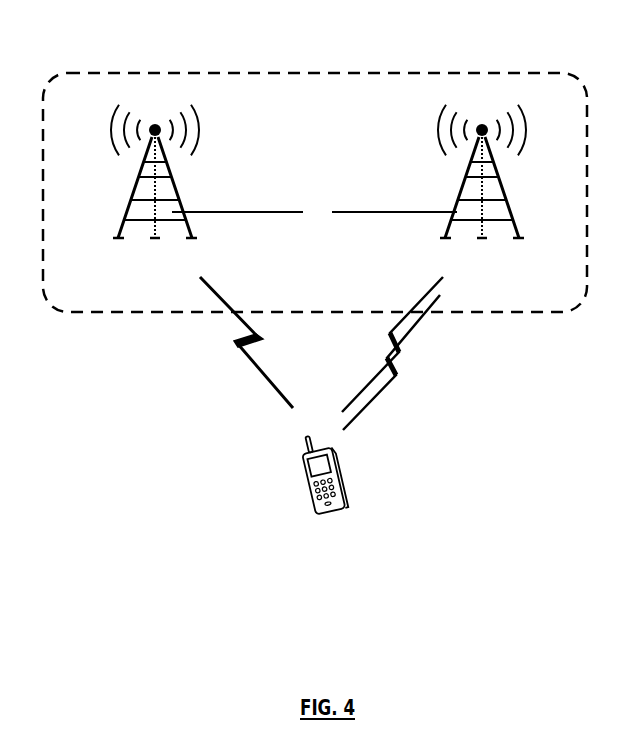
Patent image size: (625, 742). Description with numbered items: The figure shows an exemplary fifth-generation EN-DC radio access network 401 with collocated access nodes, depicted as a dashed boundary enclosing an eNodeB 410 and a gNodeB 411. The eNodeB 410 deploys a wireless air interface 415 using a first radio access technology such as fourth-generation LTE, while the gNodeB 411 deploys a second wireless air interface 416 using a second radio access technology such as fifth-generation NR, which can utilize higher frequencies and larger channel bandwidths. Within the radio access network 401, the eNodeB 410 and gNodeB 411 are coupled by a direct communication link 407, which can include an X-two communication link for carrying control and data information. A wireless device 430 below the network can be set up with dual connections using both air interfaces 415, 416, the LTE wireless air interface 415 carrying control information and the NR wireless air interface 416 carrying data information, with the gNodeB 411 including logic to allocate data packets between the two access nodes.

The radio access network 401 is at (117, 70).
The direct communication link 407 is at (381, 212).
The eNodeB 410 is at (139, 201).
The gNodeB 411 is at (502, 203).
The wireless air interface 415 is at (244, 343).
The second wireless air interface 416 is at (415, 376).
The wireless device 430 is at (313, 503).